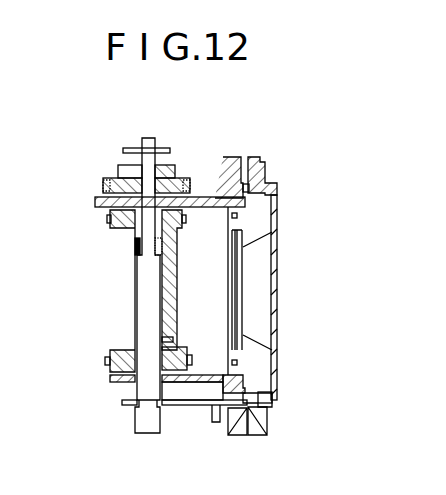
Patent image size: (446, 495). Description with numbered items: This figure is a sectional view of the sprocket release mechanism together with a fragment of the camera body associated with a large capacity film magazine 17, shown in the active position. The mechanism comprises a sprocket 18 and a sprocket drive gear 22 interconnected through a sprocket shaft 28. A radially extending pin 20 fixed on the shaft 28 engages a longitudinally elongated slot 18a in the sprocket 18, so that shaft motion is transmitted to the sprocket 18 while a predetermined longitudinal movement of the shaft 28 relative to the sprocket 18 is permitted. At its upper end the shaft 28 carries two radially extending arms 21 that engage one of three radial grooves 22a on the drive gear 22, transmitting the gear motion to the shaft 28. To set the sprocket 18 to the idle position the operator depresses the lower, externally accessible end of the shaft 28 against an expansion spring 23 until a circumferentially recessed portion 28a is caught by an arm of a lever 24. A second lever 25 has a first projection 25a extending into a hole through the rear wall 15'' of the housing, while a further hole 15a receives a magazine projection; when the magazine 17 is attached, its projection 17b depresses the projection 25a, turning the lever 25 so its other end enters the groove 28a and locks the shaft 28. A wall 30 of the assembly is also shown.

The rear wall of the camera housing 15'' is at (244, 444).
The hole 15a is at (201, 397).
The large capacity film magazine 17 is at (263, 432).
The projection of magazine 17b is at (268, 400).
The sprocket 18 is at (122, 296).
The longitudinally elongated slot 18a is at (180, 360).
The radially extending pin 20 is at (177, 338).
The radially extending arms 21 is at (136, 148).
The sprocket drive gear 22 is at (178, 186).
The radial grooves 22a is at (166, 170).
The expansion spring 23 is at (135, 248).
The lever 24 is at (122, 403).
The second lever 25 is at (210, 406).
The first projection 25a is at (246, 383).
The sprocket shaft 28 is at (149, 140).
The circumferentially recessed portion 28a is at (146, 415).
The side wall 30 is at (277, 283).